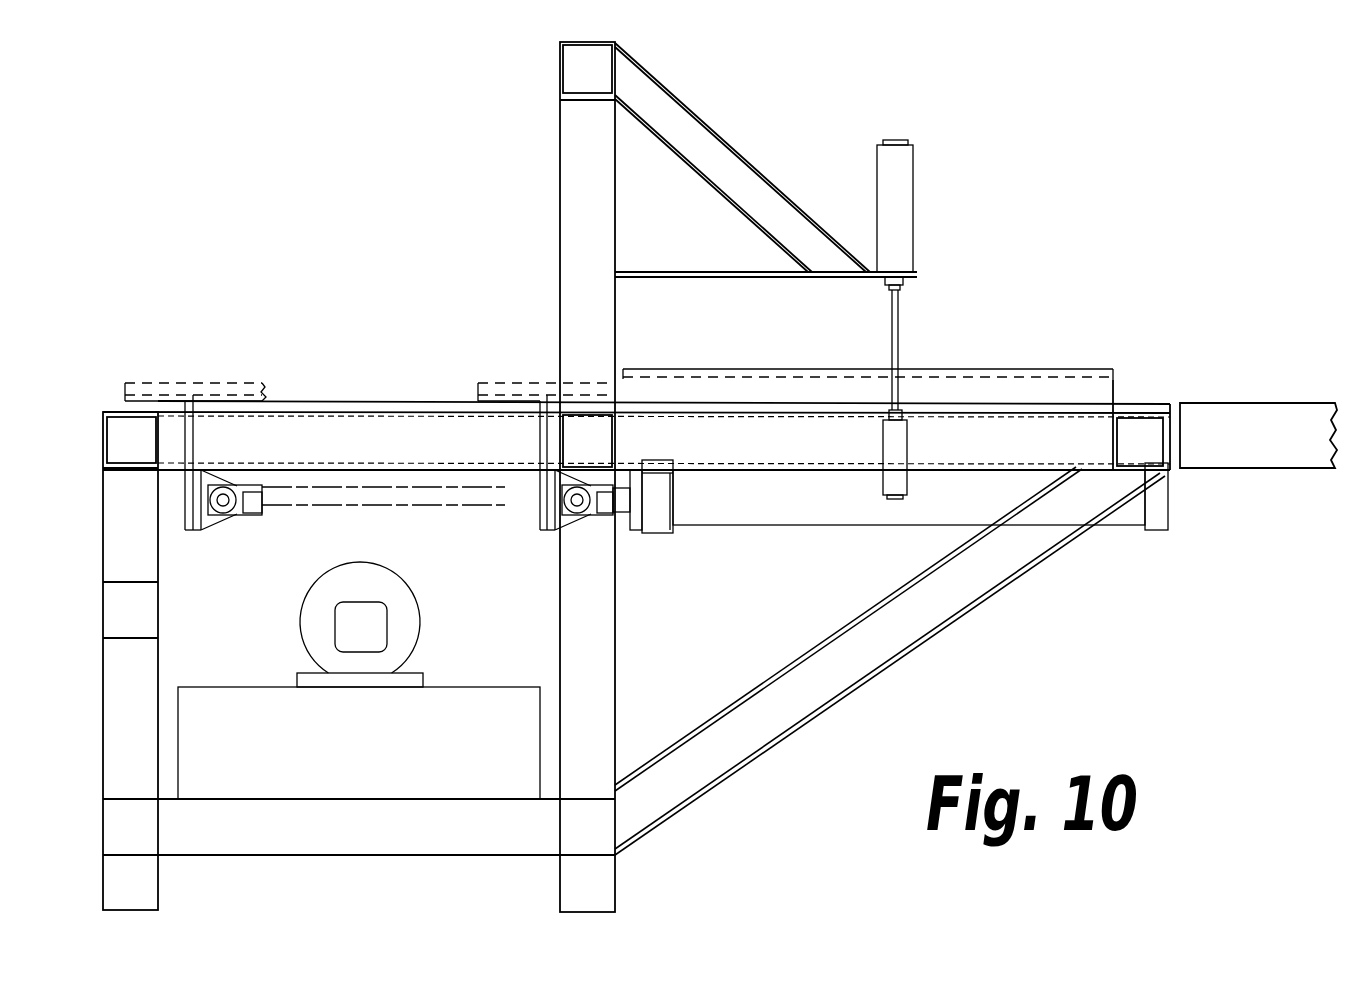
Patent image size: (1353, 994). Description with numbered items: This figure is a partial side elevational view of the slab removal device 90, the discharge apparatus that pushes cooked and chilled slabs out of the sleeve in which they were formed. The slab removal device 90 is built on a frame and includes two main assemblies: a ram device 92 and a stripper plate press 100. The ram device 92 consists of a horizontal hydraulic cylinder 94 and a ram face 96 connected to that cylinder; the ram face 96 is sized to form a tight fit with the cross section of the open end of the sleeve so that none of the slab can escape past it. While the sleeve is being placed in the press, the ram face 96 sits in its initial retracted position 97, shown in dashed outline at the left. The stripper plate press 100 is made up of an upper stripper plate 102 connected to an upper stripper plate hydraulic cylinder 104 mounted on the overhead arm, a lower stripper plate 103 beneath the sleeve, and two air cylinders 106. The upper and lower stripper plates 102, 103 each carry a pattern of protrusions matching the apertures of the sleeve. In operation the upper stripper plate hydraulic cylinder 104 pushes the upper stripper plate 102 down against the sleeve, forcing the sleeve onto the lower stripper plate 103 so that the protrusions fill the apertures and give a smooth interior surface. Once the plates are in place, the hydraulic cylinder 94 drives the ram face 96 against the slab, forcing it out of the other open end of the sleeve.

The slab removal device 90 is at (985, 140).
The ram device 92 is at (700, 540).
The hydraulic cylinder 94 is at (830, 526).
The ram face 96 is at (503, 382).
The initial retracted position 97 is at (195, 443).
The stripper plate press 100 is at (983, 291).
The upper stripper plate 102 is at (1072, 370).
The lower stripper plate 103 is at (1033, 408).
The upper stripper plate hydraulic cylinder 104 is at (914, 217).
The air cylinders 106 is at (906, 487).